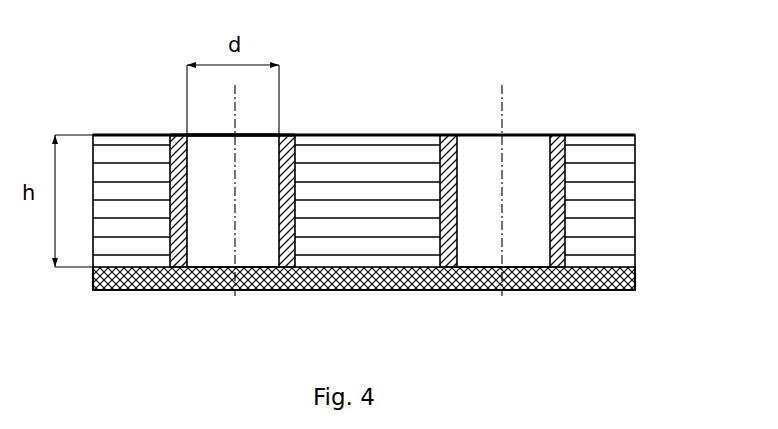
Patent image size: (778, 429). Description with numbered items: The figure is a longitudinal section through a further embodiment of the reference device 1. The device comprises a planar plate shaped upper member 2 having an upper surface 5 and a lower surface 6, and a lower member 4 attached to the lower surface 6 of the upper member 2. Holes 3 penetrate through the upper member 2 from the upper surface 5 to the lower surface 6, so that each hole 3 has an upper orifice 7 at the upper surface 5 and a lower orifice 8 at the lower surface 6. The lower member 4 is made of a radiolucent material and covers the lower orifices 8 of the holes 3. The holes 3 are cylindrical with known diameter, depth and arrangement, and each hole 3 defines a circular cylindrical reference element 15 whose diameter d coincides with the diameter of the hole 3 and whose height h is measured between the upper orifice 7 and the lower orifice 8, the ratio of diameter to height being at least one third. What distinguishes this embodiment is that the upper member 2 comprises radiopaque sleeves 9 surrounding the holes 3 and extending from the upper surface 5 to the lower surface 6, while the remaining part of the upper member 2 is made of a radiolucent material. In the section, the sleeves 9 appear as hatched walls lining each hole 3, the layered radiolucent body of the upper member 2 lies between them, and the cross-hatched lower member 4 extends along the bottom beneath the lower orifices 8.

The reference device 1 is at (580, 50).
The upper member 2 is at (612, 193).
The hole 3 is at (255, 150).
The lower member 4 is at (622, 290).
The upper surface 5 is at (347, 135).
The lower surface 6 is at (293, 268).
The upper orifice 7 is at (187, 135).
The lower orifice 8 is at (168, 290).
The radiopaque sleeve 9 is at (168, 180).
The reference element 15 is at (213, 135).